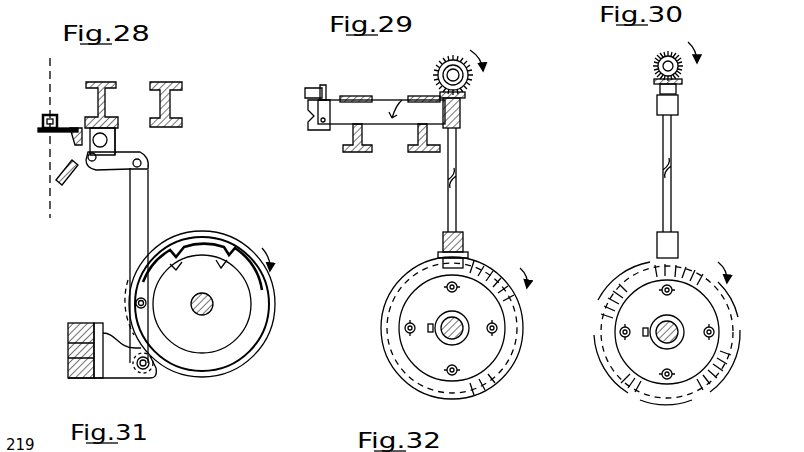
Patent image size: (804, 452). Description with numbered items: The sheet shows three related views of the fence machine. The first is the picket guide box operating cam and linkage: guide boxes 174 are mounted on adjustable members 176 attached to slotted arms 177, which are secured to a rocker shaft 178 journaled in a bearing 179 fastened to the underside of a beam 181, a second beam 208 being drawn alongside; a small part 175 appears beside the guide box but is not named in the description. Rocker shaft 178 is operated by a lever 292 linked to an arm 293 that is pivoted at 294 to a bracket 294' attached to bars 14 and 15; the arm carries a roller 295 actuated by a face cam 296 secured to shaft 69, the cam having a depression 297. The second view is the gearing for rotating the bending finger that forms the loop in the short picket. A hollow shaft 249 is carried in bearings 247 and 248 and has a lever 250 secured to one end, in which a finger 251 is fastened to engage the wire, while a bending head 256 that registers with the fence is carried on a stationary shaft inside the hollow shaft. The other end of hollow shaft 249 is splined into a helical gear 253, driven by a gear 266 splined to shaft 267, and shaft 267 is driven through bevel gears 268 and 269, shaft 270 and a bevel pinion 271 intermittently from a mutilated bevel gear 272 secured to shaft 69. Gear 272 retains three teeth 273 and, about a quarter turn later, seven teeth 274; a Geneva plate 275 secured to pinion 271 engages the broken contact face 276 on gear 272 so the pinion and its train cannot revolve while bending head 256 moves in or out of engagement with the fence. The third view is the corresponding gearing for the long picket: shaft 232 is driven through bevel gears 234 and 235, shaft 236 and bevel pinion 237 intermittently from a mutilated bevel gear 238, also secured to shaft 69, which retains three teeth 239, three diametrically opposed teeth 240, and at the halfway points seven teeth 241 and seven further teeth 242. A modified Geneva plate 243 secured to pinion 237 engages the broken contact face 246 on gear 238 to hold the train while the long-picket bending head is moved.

In FIG. 28, the bar 14 is at (70, 325).
In FIG. 28, the bar 15 is at (70, 378).
In FIG. 28, the shaft 69 is at (213, 304).
In FIG. 29, the shaft 69 is at (462, 322).
In FIG. 30, the shaft 69 is at (676, 326).
In FIG. 28, the guide box 174 is at (58, 128).
In FIG. 28, the pin 175 is at (52, 114).
In FIG. 28, the adjustable member 176 is at (73, 133).
In FIG. 28, the slotted arm 177 is at (73, 147).
In FIG. 28, the rocker shaft 178 is at (108, 142).
In FIG. 28, the bearing 179 is at (116, 128).
In FIG. 28, the beam 181 is at (108, 103).
In FIG. 29, the beam 181 is at (352, 148).
In FIG. 28, the beam 208 is at (181, 122).
In FIG. 29, the beam 208 is at (420, 150).
In FIG. 30, the shaft 232 is at (680, 72).
In FIG. 30, the bevel gear 234 is at (652, 66).
In FIG. 30, the bevel gear 235 is at (653, 84).
In FIG. 30, the shaft 236 is at (661, 140).
In FIG. 30, the bevel pinion 237 is at (656, 278).
In FIG. 30, the mutilated bevel gear 238 is at (690, 396).
In FIG. 30, the teeth 239 is at (698, 268).
In FIG. 30, the teeth 240 is at (646, 392).
In FIG. 30, the teeth 241 is at (612, 292).
In FIG. 30, the teeth 242 is at (714, 380).
In FIG. 30, the Geneva plate 243 is at (676, 266).
In FIG. 30, the broken contact face 246 is at (670, 412).
In FIG. 29, the bearing 247 is at (352, 97).
In FIG. 29, the bearing 248 is at (422, 96).
In FIG. 29, the hollow shaft 249 is at (400, 106).
In FIG. 29, the lever 250 is at (324, 124).
In FIG. 29, the finger 251 is at (313, 90).
In FIG. 29, the helical gear 253 is at (460, 120).
In FIG. 29, the bending head 256 is at (312, 112).
In FIG. 29, the gear 266 is at (464, 84).
In FIG. 29, the shaft 267 is at (470, 76).
In FIG. 29, the bevel gear 268 is at (440, 66).
In FIG. 29, the bevel gear 269 is at (463, 96).
In FIG. 29, the shaft 270 is at (456, 202).
In FIG. 29, the bevel pinion 271 is at (440, 252).
In FIG. 29, the mutilated bevel gear 272 is at (500, 340).
In FIG. 29, the teeth 273 is at (480, 390).
In FIG. 29, the teeth 274 is at (470, 262).
In FIG. 29, the Geneva plate 275 is at (462, 246).
In FIG. 29, the broken contact face 276 is at (382, 340).
In FIG. 28, the lever 292 is at (120, 152).
In FIG. 28, the arm 293 is at (148, 200).
In FIG. 28, the pivot 294 is at (152, 381).
In FIG. 28, the bracket 294' is at (117, 370).
In FIG. 28, the roller 295 is at (136, 292).
In FIG. 28, the face cam 296 is at (212, 364).
In FIG. 28, the depression 297 is at (210, 235).